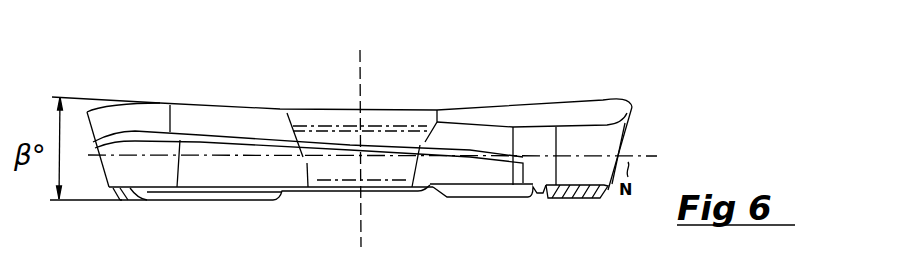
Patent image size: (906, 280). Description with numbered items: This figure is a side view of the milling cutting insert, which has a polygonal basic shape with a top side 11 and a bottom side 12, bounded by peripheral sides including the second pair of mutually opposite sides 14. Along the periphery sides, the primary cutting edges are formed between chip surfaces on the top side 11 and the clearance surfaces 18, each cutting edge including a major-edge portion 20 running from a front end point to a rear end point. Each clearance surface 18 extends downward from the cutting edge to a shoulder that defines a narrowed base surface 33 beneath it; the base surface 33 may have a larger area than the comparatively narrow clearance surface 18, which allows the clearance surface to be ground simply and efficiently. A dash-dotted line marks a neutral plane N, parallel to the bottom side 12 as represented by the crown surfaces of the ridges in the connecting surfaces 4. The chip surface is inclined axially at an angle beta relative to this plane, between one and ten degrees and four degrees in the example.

The connecting surfaces 4 is at (497, 195).
The top side 11 is at (407, 97).
The bottom side 12 is at (407, 203).
The second pair of opposite sides 14 is at (97, 173).
The clearance surface 18 is at (257, 120).
The major-edge portion 20 is at (217, 105).
The base surface 33 is at (242, 172).